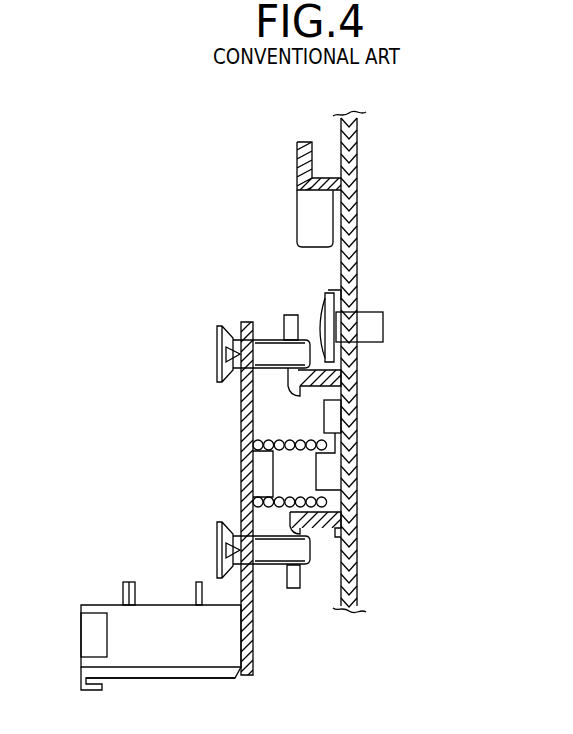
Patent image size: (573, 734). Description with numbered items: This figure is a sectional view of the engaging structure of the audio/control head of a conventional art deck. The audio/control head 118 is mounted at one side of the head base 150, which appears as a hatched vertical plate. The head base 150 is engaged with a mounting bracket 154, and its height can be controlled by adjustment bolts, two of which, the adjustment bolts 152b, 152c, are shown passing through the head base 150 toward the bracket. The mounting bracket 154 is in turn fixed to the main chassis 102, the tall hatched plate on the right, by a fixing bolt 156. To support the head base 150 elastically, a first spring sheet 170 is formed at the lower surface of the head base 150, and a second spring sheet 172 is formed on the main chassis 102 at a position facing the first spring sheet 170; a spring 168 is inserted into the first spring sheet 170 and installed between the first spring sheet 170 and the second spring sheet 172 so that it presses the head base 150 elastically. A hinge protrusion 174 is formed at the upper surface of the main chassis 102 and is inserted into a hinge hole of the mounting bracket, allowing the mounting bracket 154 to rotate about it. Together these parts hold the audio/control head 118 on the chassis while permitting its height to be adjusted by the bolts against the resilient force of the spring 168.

The main chassis 102 is at (349, 229).
The audio/control head 118 is at (123, 621).
The head base 150 is at (252, 641).
The adjustment bolt 152b is at (214, 524).
The adjustment bolt 152c is at (213, 330).
The mounting bracket 154 is at (333, 392).
The fixing bolt 156 is at (375, 323).
The spring 168 is at (330, 500).
The first spring sheet 170 is at (262, 469).
The second spring sheet 172 is at (335, 468).
The hinge protrusion 174 is at (337, 421).